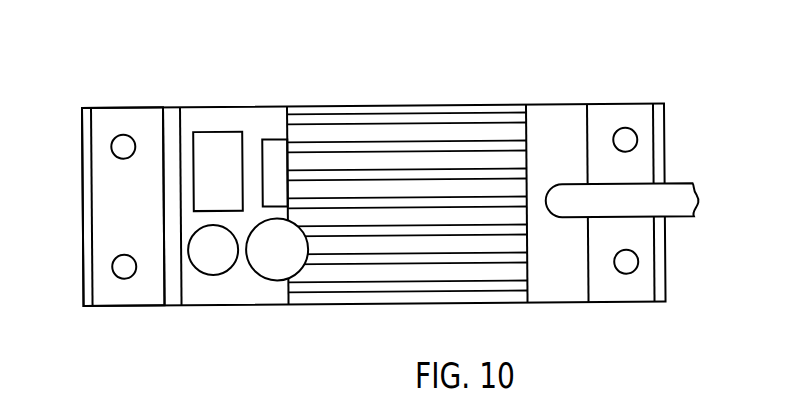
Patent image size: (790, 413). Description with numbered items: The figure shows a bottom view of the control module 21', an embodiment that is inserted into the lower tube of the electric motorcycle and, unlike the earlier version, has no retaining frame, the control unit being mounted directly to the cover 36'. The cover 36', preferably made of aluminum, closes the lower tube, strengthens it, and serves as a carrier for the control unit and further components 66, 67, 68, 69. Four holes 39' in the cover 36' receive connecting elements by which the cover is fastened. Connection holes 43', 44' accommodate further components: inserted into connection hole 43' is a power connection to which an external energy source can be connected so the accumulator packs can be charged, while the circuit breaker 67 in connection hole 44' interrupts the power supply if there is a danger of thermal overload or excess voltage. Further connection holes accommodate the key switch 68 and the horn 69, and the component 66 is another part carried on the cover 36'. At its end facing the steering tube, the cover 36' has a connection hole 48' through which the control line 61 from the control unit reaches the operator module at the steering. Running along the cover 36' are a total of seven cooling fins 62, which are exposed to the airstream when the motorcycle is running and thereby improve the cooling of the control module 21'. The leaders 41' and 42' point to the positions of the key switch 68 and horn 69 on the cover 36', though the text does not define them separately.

The control module 21' is at (374, 161).
The cover 36' is at (101, 206).
The holes 39' is at (370, 205).
The first component 41' is at (213, 289).
The second component 42' is at (277, 285).
The connection hole 43' is at (213, 137).
The connection hole 44' is at (263, 135).
The connection hole 48' is at (557, 180).
The control line 61 is at (677, 190).
The cooling fins 62 is at (385, 121).
The further component 66 is at (229, 183).
The circuit breaker 67 is at (285, 183).
The key switch 68 is at (225, 264).
The horn 69 is at (288, 264).